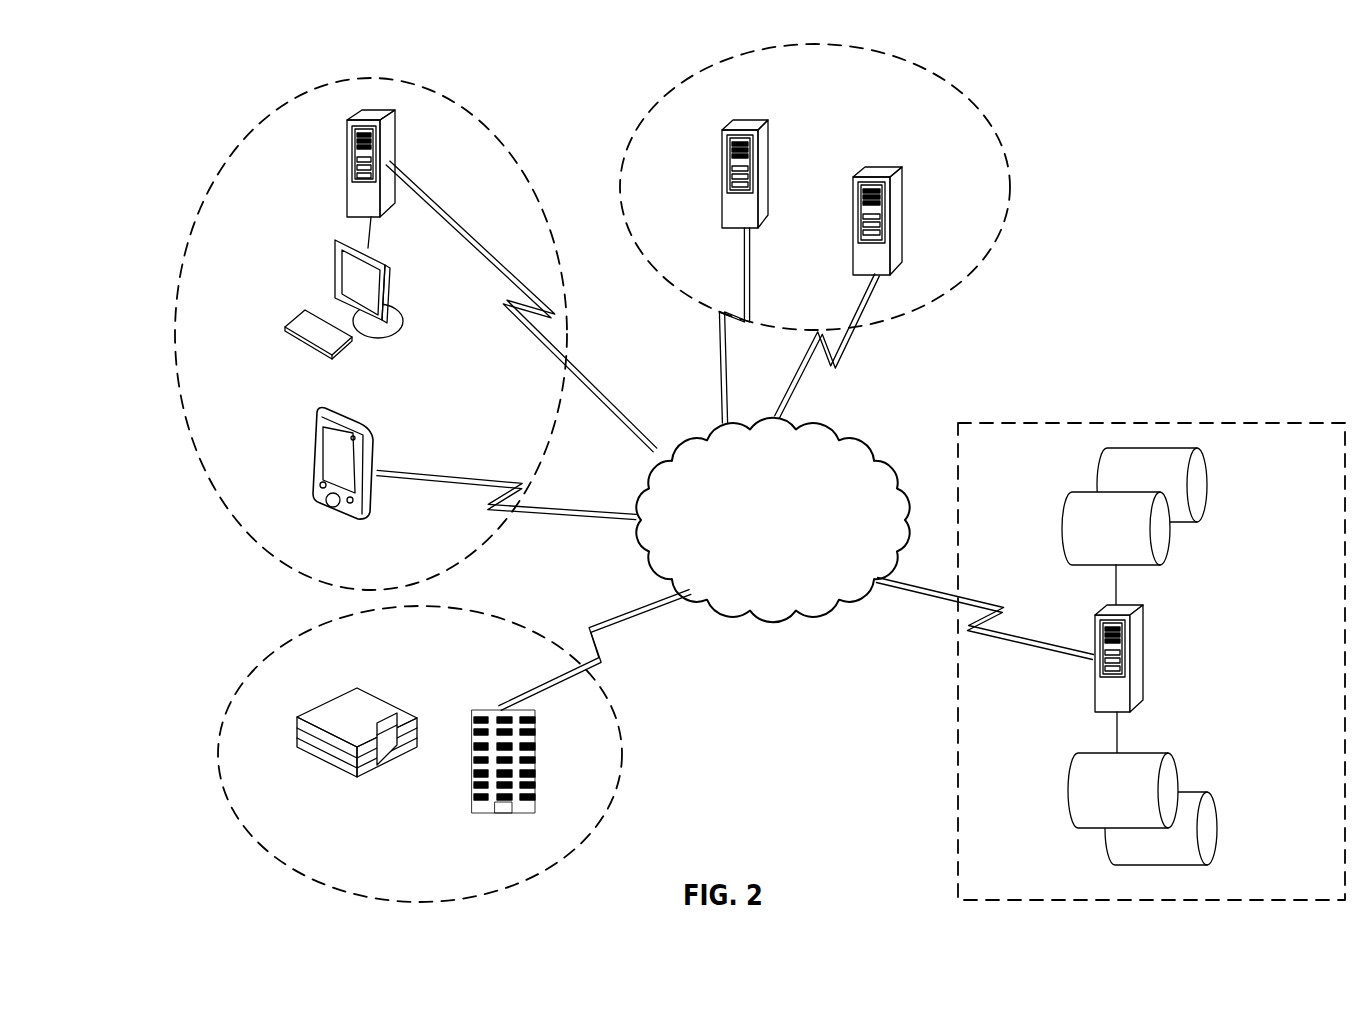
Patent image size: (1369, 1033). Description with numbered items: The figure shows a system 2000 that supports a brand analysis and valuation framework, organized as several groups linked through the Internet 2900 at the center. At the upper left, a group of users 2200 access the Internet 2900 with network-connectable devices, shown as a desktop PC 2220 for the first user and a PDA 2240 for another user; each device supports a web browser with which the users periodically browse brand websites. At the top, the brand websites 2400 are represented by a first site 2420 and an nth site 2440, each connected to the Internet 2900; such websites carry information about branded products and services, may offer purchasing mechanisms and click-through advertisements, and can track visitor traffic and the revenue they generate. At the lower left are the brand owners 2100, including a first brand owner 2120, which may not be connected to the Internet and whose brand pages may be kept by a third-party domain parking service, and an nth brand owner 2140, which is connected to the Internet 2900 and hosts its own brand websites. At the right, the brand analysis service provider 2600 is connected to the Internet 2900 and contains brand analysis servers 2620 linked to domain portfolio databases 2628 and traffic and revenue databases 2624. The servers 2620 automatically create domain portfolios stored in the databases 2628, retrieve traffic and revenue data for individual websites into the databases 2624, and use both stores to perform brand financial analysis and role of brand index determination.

The system 2000 is at (201, 74).
The users 2200 is at (371, 311).
The desktop PC 2220 is at (368, 234).
The PDA 2240 is at (379, 464).
The brand websites 2400 is at (875, 182).
The site 1 2420 is at (711, 174).
The site n 2440 is at (847, 221).
The Internet 2900 is at (772, 520).
The brand analysis service provider 2600 is at (1151, 634).
The domain portfolio databases 2628 is at (1179, 524).
The brand analysis servers 2620 is at (1170, 648).
The traffic and revenue databases 2624 is at (1172, 792).
The brand owners 2100 is at (501, 754).
The brand owner 1 2120 is at (350, 748).
The brand owner n 2140 is at (529, 792).